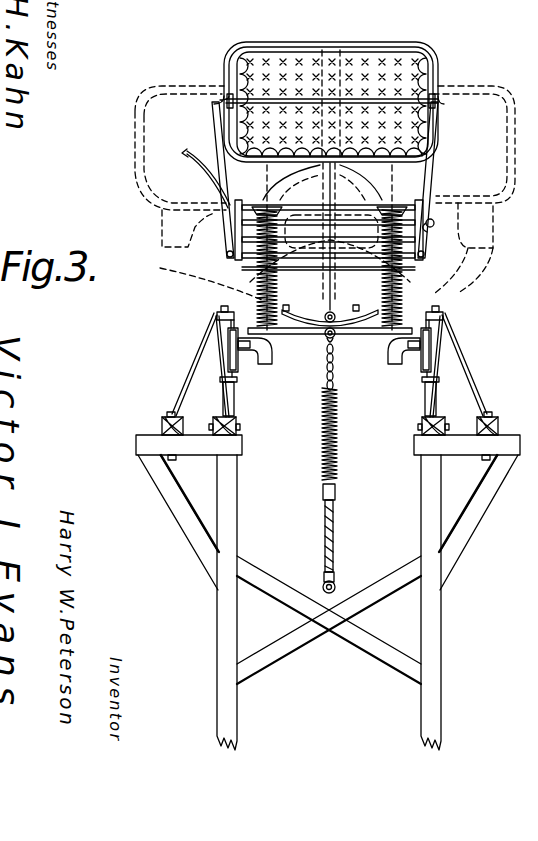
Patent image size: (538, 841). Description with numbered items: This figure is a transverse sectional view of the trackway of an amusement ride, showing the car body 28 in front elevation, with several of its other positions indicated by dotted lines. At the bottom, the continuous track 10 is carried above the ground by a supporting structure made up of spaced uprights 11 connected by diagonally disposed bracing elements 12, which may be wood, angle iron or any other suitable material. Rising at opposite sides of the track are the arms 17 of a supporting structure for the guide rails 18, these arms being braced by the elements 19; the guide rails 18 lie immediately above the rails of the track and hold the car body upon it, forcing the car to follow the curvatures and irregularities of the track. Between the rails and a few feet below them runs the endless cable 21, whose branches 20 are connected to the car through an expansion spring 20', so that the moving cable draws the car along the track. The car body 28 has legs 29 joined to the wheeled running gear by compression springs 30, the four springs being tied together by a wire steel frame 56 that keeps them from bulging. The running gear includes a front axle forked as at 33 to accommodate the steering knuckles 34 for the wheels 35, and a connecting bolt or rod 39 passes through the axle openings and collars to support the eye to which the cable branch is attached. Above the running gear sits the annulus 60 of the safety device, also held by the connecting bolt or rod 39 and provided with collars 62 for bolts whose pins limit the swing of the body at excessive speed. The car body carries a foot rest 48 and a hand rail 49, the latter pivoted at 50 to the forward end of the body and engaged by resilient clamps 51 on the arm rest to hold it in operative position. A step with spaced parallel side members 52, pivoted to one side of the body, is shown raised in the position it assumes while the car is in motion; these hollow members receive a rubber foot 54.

The continuous track 10 is at (232, 372).
The spaced uprights 11 is at (430, 624).
The diagonally disposed bracing elements 12 is at (167, 483).
The arms 17 is at (192, 372).
The guide rails 18 is at (226, 312).
The bracing elements 19 is at (225, 400).
The branches of the endless cable 20 is at (349, 463).
The expansion spring 20' is at (350, 434).
The endless cable 21 is at (324, 585).
The car body 28 is at (433, 74).
The legs 29 is at (415, 180).
The compression springs 30 is at (260, 298).
The fork 33 is at (258, 340).
The steering knuckles 34 is at (263, 345).
The wheels 35 is at (233, 340).
The connecting bolt or rod 39 is at (336, 343).
The foot rest 48 is at (433, 231).
The hand rail 49 is at (415, 103).
The pivot 50 is at (432, 204).
The resilient clamps 51 is at (436, 101).
The spaced parallel side members 52 is at (208, 172).
The rubber foot 54 is at (195, 171).
The wire steel frame 56 is at (160, 268).
The annulus 60 is at (316, 328).
The collars 62 is at (298, 311).